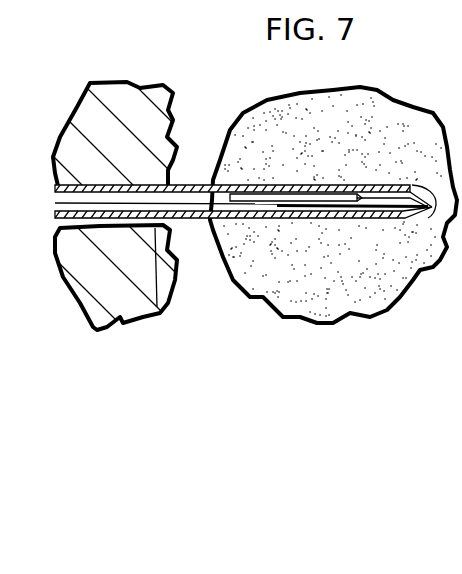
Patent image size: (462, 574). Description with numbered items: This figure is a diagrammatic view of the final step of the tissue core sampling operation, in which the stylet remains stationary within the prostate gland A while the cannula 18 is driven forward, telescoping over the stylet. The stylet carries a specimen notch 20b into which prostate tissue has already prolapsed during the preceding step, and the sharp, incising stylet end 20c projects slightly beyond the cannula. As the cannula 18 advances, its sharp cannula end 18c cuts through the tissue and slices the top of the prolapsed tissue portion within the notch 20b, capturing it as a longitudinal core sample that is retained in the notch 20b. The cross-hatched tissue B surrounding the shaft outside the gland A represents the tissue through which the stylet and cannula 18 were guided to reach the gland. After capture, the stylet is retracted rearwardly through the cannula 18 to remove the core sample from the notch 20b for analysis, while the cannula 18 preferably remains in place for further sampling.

The cannula 18 is at (206, 185).
The sharp end of the cannula 18c is at (438, 213).
The stylet notch 20b is at (208, 203).
The stylet end 20c is at (403, 213).
The prostate gland A is at (333, 181).
The tissue B is at (157, 307).